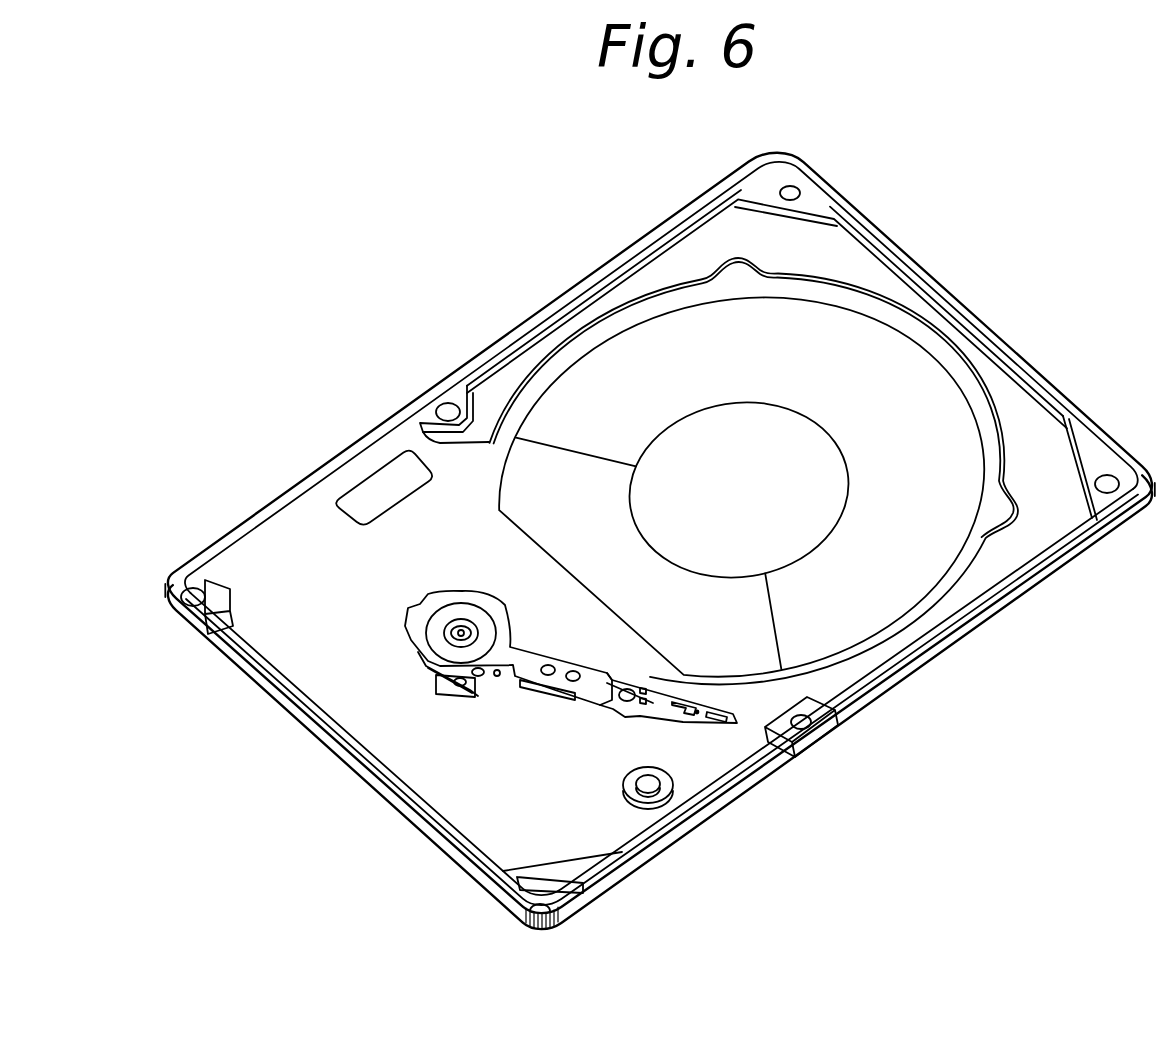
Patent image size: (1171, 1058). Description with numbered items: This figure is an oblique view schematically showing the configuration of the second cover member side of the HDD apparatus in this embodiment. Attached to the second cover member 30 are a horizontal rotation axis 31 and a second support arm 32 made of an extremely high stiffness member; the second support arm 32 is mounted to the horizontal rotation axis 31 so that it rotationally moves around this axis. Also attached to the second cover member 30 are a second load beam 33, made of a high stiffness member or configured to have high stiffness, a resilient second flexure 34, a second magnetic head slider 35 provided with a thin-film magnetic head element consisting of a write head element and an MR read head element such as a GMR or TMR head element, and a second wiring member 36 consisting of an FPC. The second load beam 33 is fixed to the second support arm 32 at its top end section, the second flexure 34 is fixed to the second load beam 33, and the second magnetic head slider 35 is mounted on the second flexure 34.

The second cover member 30 is at (836, 138).
The horizontal rotation axis 31 is at (461, 633).
The second support arm 32 is at (510, 650).
The second load beam 33 is at (630, 707).
The second flexure 34 is at (693, 703).
The second magnetic head slider 35 is at (717, 722).
The second wiring member 36 is at (543, 682).